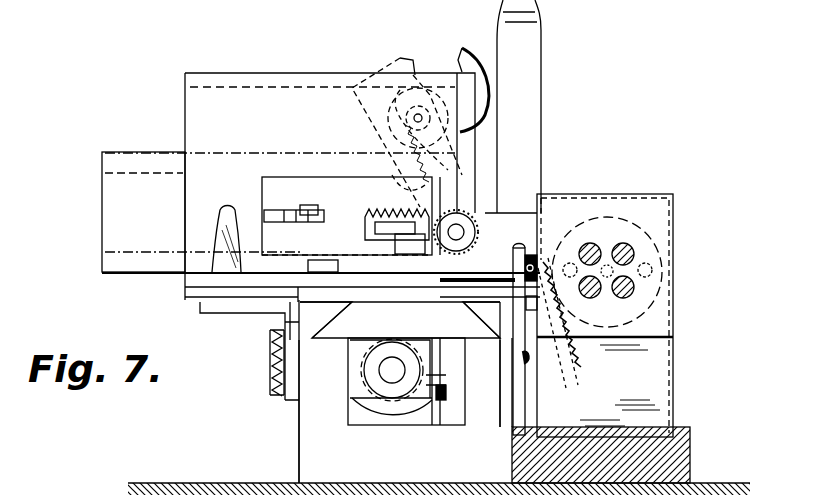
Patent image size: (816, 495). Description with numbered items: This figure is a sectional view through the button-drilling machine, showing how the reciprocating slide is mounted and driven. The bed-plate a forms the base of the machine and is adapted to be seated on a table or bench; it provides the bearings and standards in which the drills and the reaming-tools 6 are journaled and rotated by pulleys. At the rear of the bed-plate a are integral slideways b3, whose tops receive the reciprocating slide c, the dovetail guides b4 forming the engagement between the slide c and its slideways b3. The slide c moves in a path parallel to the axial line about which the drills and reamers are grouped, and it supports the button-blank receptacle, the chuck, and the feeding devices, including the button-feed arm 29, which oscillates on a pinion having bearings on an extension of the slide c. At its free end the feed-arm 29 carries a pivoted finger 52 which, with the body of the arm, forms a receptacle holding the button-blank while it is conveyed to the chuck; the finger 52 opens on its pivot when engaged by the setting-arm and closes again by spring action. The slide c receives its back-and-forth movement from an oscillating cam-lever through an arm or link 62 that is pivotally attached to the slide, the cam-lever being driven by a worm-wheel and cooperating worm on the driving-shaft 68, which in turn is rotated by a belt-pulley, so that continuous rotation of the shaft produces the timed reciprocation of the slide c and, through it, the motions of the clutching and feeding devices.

The button-feed arm 29 is at (400, 58).
The finger 52 is at (465, 60).
The reaming-tools 6 is at (620, 244).
The slide c is at (400, 319).
The dovetail guide b4 is at (328, 338).
The slideways b3 is at (399, 411).
The driving-shaft 68 is at (392, 370).
The arm or link 62 is at (441, 402).
The bed-plate a is at (697, 455).